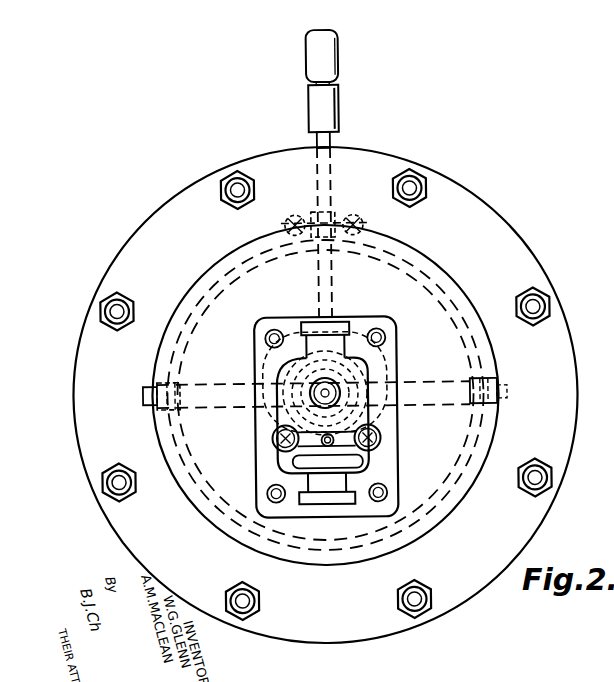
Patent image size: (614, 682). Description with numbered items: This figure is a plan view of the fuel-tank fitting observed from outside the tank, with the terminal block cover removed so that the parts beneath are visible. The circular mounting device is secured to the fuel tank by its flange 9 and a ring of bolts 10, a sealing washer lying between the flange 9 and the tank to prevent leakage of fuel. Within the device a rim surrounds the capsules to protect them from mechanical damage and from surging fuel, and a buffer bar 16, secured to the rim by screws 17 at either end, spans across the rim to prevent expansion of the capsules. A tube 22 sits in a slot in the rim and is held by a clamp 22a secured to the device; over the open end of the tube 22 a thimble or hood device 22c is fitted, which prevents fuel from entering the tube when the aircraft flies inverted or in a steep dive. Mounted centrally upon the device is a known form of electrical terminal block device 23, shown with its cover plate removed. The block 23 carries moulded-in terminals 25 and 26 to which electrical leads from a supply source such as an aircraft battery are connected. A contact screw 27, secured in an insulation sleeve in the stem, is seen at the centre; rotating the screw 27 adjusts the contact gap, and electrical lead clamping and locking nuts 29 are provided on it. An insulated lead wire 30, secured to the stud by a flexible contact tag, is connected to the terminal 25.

The flange 9 is at (574, 332).
The bolts 10 is at (543, 302).
The buffer bar 16 is at (443, 382).
The screws 17 is at (143, 393).
The tube 22 is at (333, 138).
The clamp 22a is at (342, 217).
The thimble or hood device 22c is at (342, 100).
The electrical terminal block device 23 is at (352, 321).
The terminal 25 is at (272, 437).
The terminal 26 is at (379, 441).
The contact screw 27 is at (331, 389).
The electrical lead clamping and locking nuts 29 is at (341, 402).
The insulated lead wire 30 is at (322, 449).